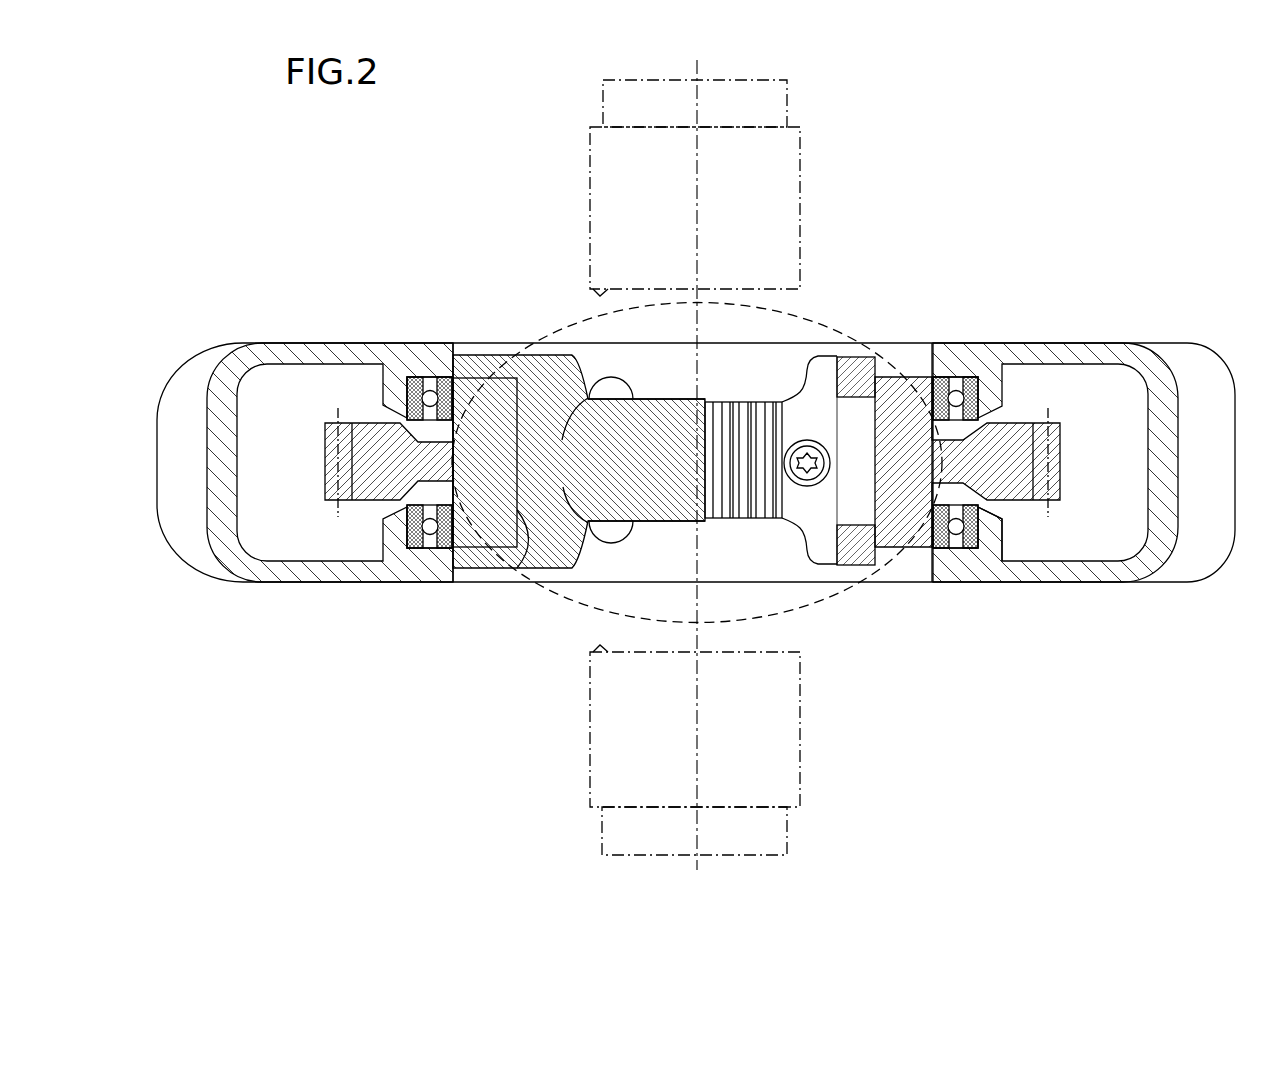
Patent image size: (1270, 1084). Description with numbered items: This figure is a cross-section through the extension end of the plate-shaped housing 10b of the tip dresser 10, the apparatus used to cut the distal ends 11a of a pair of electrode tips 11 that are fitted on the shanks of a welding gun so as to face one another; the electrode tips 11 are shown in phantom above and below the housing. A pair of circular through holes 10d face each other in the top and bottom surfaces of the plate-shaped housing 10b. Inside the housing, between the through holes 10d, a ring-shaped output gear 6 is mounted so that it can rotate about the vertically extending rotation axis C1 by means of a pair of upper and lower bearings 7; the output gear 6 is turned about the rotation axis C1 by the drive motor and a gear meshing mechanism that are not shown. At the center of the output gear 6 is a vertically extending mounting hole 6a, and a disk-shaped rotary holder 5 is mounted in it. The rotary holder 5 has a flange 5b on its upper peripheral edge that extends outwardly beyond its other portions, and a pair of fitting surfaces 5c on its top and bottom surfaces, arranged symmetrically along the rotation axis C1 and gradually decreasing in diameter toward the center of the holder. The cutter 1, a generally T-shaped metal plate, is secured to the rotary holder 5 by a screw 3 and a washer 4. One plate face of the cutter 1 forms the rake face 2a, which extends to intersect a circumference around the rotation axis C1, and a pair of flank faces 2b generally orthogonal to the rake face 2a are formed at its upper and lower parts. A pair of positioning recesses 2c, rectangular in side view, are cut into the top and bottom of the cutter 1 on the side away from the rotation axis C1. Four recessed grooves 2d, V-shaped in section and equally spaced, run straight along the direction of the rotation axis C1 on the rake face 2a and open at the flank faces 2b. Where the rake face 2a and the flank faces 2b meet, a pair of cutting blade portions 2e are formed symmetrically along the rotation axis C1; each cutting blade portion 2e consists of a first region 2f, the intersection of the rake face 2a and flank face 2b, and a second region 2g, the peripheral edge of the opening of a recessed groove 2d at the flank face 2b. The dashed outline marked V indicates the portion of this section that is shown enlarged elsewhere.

The cutter 1 is at (799, 489).
The rake face 2a is at (847, 423).
The flank face 2b is at (800, 365).
The positioning recess 2c is at (858, 367).
The recessed groove 2d is at (772, 403).
The cutting blade portion 2e is at (695, 508).
The first region 2f is at (640, 398).
The second region 2g is at (700, 400).
The screw 3 is at (827, 462).
The washer 4 is at (985, 550).
The rotary holder 5 is at (479, 454).
The flange 5b is at (450, 365).
The fitting surface 5c is at (589, 460).
The output gear 6 is at (1062, 420).
The mounting hole 6a is at (530, 540).
The bearing 7 is at (965, 380).
The tip dresser 10 is at (669, 431).
The plate-shaped housing 10b is at (188, 358).
The through hole 10d is at (410, 343).
The electrode tip 11 is at (800, 128).
The distal end 11a is at (593, 292).
The rotation axis C1 is at (700, 68).
The section plane indicator V is at (793, 334).